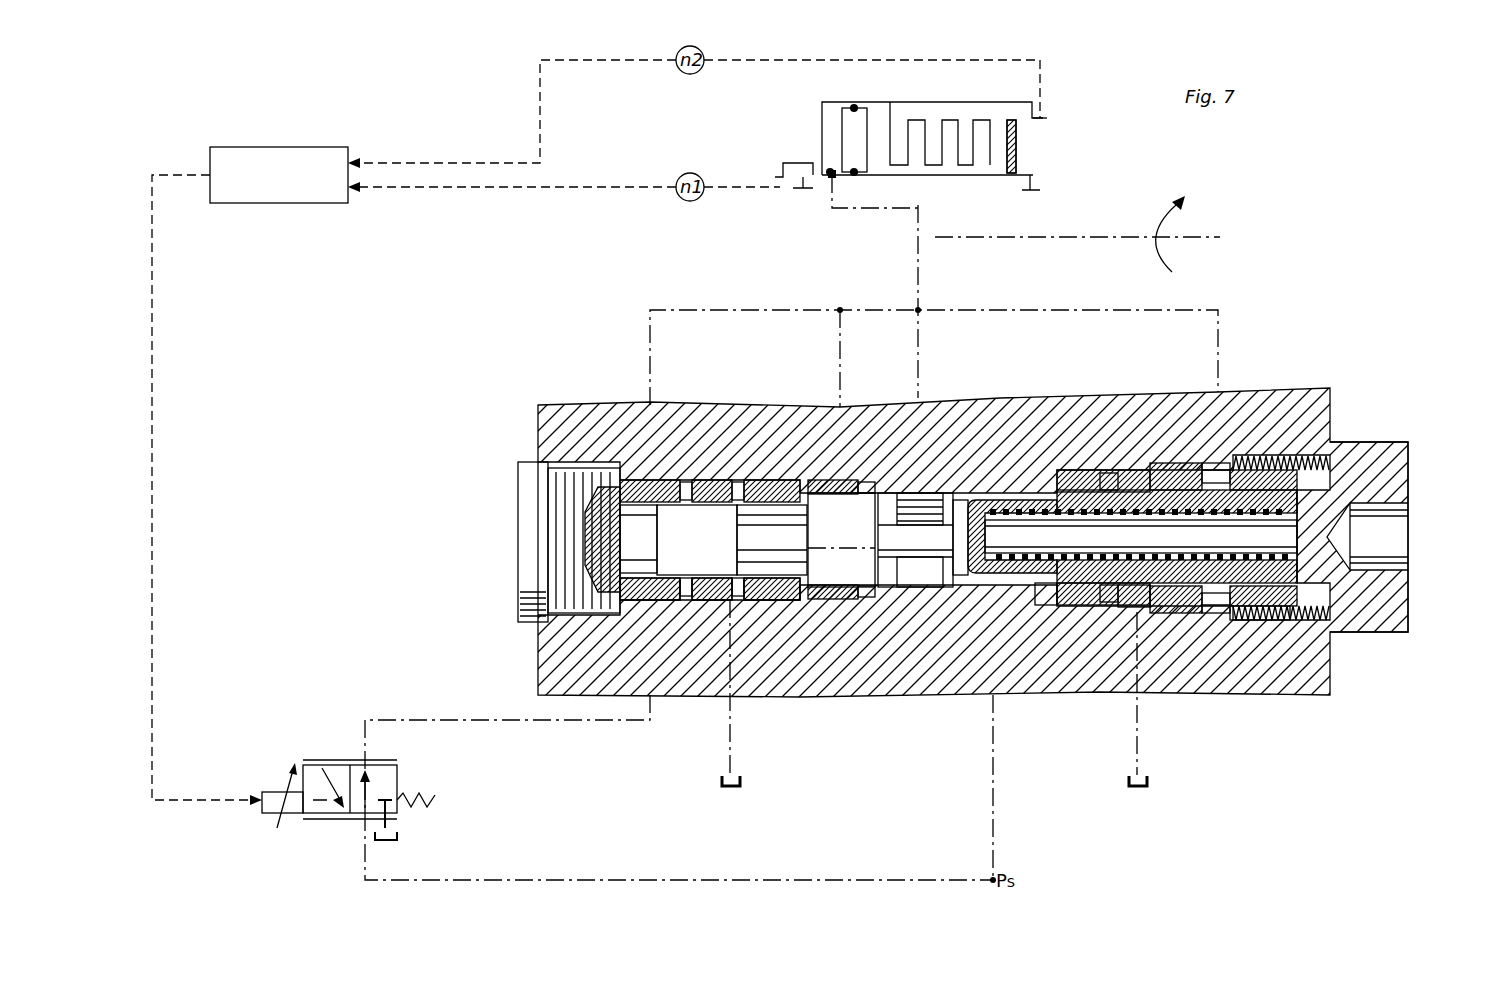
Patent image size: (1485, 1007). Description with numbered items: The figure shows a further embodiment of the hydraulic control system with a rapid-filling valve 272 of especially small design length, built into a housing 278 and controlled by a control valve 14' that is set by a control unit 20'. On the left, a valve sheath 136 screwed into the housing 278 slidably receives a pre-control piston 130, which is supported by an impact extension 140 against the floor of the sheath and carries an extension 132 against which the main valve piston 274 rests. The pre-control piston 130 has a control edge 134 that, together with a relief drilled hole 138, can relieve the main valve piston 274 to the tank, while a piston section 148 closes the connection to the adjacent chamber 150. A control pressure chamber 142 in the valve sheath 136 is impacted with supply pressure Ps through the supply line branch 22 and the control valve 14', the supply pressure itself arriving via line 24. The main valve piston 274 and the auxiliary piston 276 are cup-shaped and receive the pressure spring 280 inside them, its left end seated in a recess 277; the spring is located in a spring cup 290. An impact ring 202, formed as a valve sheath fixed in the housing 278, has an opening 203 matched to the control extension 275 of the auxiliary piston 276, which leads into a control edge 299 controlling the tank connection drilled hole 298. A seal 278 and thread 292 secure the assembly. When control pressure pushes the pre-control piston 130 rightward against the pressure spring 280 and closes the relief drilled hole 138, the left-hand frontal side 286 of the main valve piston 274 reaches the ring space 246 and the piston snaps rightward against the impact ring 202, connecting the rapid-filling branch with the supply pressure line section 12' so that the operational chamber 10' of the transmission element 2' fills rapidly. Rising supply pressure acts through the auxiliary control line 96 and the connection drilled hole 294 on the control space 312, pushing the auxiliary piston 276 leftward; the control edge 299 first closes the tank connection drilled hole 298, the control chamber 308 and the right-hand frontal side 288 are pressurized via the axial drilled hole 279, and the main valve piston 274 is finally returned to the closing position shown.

The transmission element 2' is at (1056, 138).
The operational chamber 10' is at (901, 141).
The supply pressure line section 12' is at (873, 214).
The control valve 14' is at (348, 817).
The control unit 20' is at (279, 145).
The supply line branch 22 is at (490, 722).
The supply pressure line 24 is at (993, 810).
The auxiliary control line 96 is at (1000, 310).
The pre-control piston 130 is at (670, 600).
The extension 132 is at (753, 520).
The control edge 134 is at (720, 598).
The valve sheath 136 is at (633, 540).
The relief drilled hole 138 is at (735, 495).
The impact extension 140 is at (530, 606).
The control pressure chamber 142 is at (600, 507).
The piston section 148 is at (852, 560).
The piston chamber 150 is at (820, 600).
The impact ring 202 is at (1062, 485).
The opening 203 is at (1040, 500).
The ring space 246 is at (806, 500).
The rapid-filling valve 272 is at (1338, 424).
The main valve piston 274 is at (905, 560).
The control extension 275 is at (1100, 605).
The auxiliary piston 276 is at (1205, 605).
The recess 277 is at (1040, 600).
The housing 278 is at (877, 405).
The axial drilled hole 279 is at (1366, 508).
The pressure spring 280 is at (1040, 588).
The left-hand frontal side 286 is at (783, 590).
The right-hand frontal side 288 is at (1030, 500).
The spring cup 290 is at (968, 500).
The thread 292 is at (1272, 468).
The connection drilled hole 294 is at (1240, 608).
The tank connection drilled hole 298 is at (1155, 606).
The control edge 299 is at (1120, 480).
The control chamber 308 is at (1306, 515).
The control space 312 is at (1245, 462).